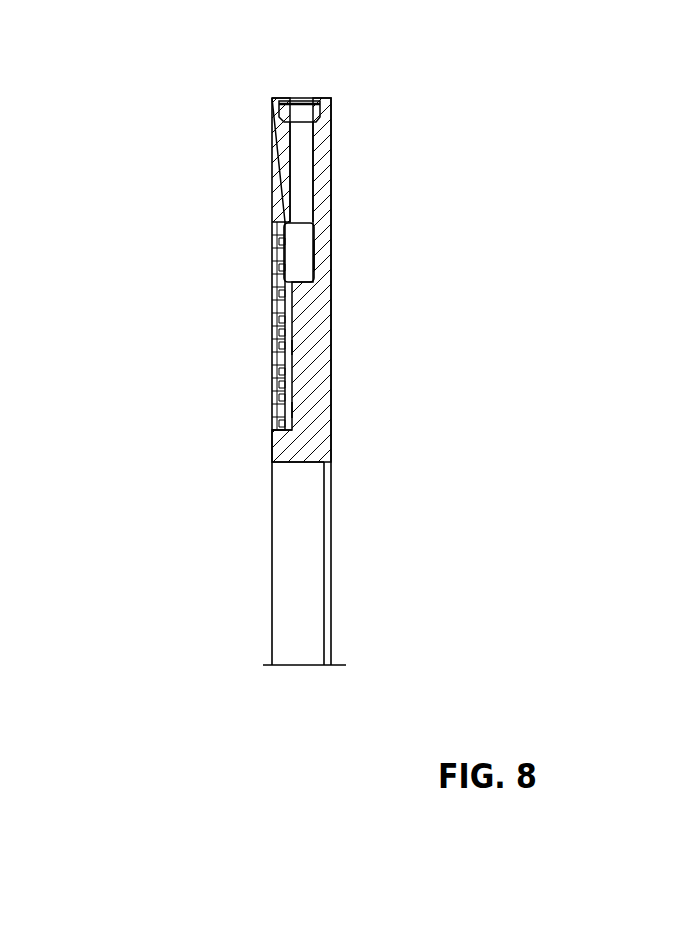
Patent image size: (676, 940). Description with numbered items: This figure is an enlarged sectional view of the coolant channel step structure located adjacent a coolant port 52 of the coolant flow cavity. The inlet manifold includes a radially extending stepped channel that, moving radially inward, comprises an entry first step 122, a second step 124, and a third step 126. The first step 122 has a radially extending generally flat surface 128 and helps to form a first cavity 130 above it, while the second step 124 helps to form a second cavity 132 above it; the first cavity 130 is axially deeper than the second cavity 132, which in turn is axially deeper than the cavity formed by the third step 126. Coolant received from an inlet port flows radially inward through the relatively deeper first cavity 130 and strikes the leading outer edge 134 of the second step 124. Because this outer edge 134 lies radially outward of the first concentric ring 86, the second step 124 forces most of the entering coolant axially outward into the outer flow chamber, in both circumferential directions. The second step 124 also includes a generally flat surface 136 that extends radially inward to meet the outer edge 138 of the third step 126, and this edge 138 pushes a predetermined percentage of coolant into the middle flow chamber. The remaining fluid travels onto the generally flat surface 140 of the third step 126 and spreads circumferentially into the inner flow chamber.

The coolant port 52 is at (303, 99).
The first concentric ring 86 is at (277, 290).
The first step 122 is at (327, 233).
The second step 124 is at (315, 313).
The third step 126 is at (297, 410).
The radially extending generally flat surface 128 is at (297, 278).
The first cavity 130 is at (303, 230).
The second cavity 132 is at (290, 335).
The leading outer edge 134 is at (313, 255).
The generally flat surface 136 is at (297, 347).
The outer edge 138 is at (291, 370).
The generally flat surface 140 is at (286, 426).